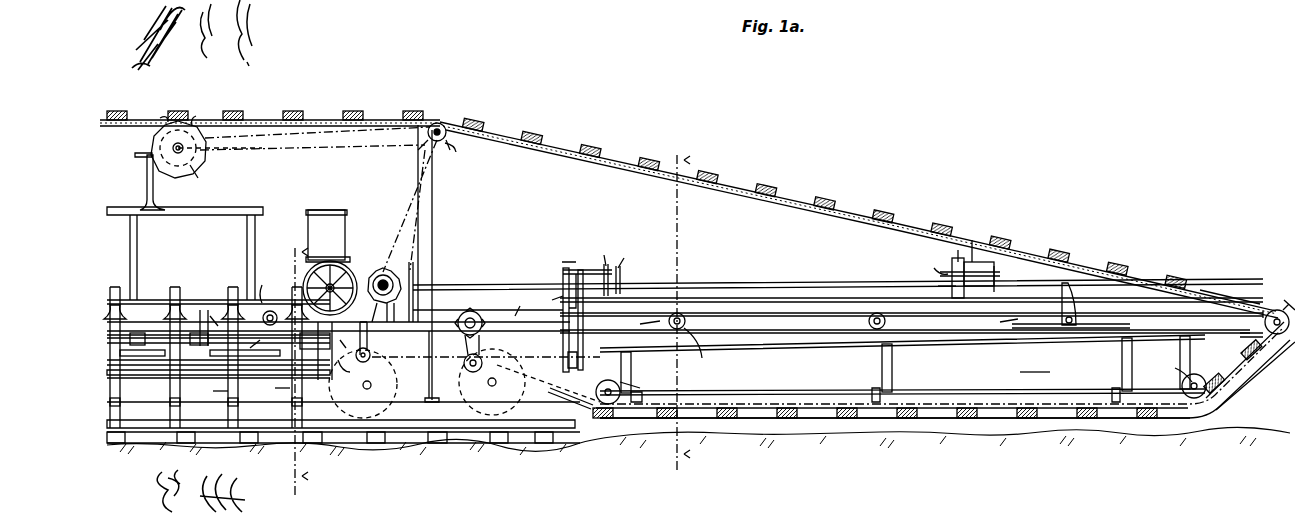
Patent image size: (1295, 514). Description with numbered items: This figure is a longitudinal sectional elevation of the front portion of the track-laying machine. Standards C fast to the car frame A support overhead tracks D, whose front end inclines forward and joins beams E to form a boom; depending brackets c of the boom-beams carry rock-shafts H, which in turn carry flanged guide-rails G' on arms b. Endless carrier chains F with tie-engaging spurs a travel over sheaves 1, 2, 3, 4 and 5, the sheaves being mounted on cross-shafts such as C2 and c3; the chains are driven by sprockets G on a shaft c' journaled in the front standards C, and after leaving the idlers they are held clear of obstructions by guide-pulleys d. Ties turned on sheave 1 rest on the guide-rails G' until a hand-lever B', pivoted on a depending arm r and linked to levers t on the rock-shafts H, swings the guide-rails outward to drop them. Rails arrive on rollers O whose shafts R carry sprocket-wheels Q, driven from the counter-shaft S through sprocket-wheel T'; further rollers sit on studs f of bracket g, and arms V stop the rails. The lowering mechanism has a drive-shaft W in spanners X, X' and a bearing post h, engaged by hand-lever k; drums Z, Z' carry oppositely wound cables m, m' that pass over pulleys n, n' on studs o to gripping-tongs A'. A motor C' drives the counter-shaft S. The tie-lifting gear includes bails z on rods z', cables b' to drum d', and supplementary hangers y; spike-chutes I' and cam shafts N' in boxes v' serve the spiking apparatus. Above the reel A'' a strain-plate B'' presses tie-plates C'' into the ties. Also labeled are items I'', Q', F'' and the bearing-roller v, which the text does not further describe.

The overhead tracks D is at (318, 118).
The spurs a is at (1092, 266).
The endless carrier chains F is at (1230, 279).
The sprockets G is at (434, 114).
The shaft c' is at (457, 155).
The standards C is at (424, 263).
The strain-plate B'' is at (206, 129).
The tie-plate C'' is at (135, 173).
The reel A'' is at (203, 179).
The motor C' is at (799, 272).
The counter-shaft S is at (372, 270).
The hand-lever k is at (416, 272).
The drive-shaft W is at (516, 288).
The gripping-tongs A' is at (838, 306).
The hand-lever B' is at (911, 322).
The studs f is at (829, 320).
The roller v is at (777, 321).
The bracket g is at (698, 352).
The beams E is at (776, 349).
The rock-shafts H is at (1035, 373).
The depending brackets c is at (905, 364).
The arms b is at (875, 384).
The cross-shaft c3 is at (610, 391).
The sheave 3 is at (636, 385).
The levers t is at (548, 383).
The depending arm r is at (558, 357).
The arms V is at (1076, 296).
The spanner X' is at (986, 278).
The pulley n' is at (957, 233).
The studs o is at (976, 250).
The drum Z' is at (924, 265).
The cable m' is at (935, 287).
The drum Z is at (603, 315).
The cable m is at (603, 249).
The pulley n is at (624, 255).
The spanner X is at (551, 299).
The car frame A is at (357, 305).
The sprocket-wheel T' is at (474, 314).
The drum d' is at (338, 328).
The bearing post h is at (486, 355).
The supplementary hangers y is at (422, 364).
The rollers O is at (364, 384).
The guide-pulleys d is at (492, 375).
The boxes v' is at (357, 342).
The cables b' is at (337, 362).
The spike-chutes I' is at (236, 350).
The post I'' is at (174, 344).
The roller shafts R is at (263, 285).
The sprocket-wheels Q is at (274, 301).
The gear Q' is at (213, 324).
The shafts N' is at (258, 345).
The bail z is at (212, 389).
The rod z' is at (273, 386).
The flanged guide-rails G' is at (895, 440).
The sheave 1 is at (1265, 332).
The sheave 2 is at (1200, 376).
The cross-shaft C2 is at (1174, 367).
The return belt F'' is at (1249, 366).
The sheave 4 is at (680, 313).
The sheave 5 is at (299, 367).